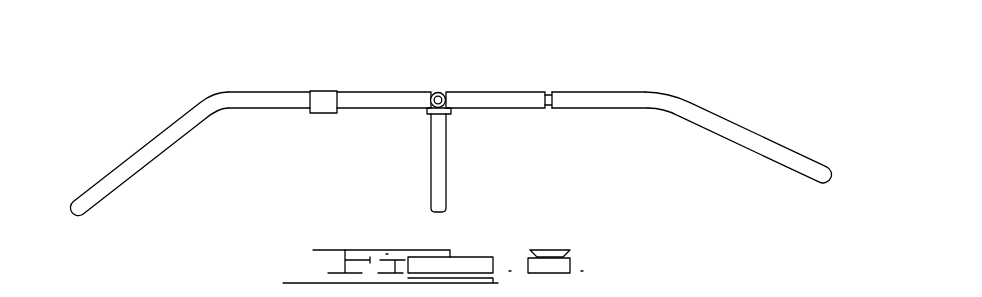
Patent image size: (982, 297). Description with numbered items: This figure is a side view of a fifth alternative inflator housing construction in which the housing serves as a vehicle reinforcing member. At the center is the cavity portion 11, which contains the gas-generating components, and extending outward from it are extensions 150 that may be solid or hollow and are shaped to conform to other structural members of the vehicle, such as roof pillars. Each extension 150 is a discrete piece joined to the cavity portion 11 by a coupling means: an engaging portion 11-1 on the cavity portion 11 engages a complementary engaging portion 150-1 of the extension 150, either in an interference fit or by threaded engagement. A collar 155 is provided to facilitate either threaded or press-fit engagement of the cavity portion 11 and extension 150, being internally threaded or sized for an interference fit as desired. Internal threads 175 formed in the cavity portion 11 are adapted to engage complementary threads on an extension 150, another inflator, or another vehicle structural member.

The extension 150 is at (168, 130).
The engaging portion of extension 150-1 is at (253, 103).
The collar 155 is at (325, 100).
The engaging portion of housing cavity portion 11-1 is at (388, 100).
The internal threads 175 is at (438, 93).
The cavity portion 11 is at (472, 108).